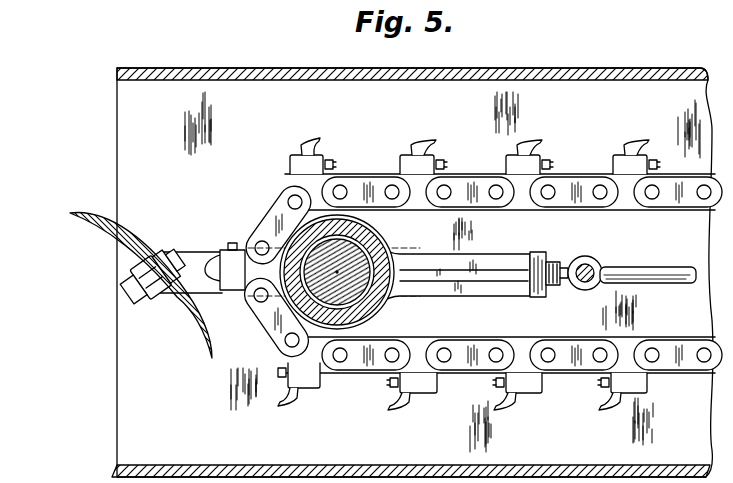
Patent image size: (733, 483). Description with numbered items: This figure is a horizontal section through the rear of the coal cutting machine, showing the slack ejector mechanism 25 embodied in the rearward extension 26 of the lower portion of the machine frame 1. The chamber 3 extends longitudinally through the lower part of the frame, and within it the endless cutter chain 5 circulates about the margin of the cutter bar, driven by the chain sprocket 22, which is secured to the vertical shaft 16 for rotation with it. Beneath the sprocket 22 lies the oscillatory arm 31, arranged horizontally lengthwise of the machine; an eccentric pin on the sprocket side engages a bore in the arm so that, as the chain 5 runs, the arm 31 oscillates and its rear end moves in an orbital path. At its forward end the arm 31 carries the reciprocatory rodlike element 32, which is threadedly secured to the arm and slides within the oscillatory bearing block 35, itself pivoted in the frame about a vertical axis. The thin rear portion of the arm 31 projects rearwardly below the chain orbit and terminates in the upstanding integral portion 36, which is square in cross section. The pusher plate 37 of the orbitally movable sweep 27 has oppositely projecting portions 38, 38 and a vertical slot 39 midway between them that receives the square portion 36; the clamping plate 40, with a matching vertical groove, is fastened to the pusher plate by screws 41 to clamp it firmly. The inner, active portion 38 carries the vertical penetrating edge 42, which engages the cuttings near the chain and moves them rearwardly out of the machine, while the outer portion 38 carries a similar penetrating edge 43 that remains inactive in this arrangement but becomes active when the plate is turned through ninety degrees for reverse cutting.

The machine frame 1 is at (412, 257).
The chamber 3 is at (320, 443).
The endless cutter chain 5 is at (402, 396).
The vertical shaft 16 is at (392, 252).
The chain sprocket 22 is at (378, 327).
The slack ejector mechanism 25 is at (138, 318).
The rearward extension 26 is at (137, 68).
The orbitally movable sweep 27 is at (186, 298).
The oscillatory arm 31 is at (500, 254).
The reciprocatory rodlike element 32 is at (668, 267).
The oscillatory bearing block 35 is at (600, 262).
The upstanding integral portion 36 is at (134, 283).
The pusher plate 37 is at (158, 246).
The oppositely projecting portions 38 is at (90, 223).
The vertical slot 39 is at (162, 263).
The clamping plate 40 is at (148, 290).
The screws 41 is at (122, 272).
The vertical penetrating edge 42 is at (207, 352).
The penetrating edge 43 is at (72, 214).